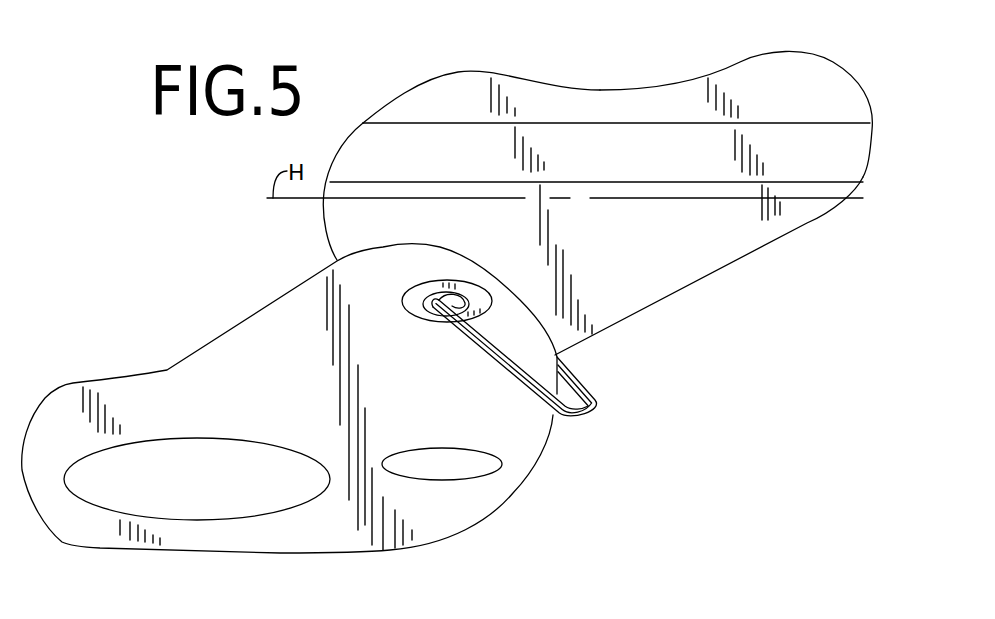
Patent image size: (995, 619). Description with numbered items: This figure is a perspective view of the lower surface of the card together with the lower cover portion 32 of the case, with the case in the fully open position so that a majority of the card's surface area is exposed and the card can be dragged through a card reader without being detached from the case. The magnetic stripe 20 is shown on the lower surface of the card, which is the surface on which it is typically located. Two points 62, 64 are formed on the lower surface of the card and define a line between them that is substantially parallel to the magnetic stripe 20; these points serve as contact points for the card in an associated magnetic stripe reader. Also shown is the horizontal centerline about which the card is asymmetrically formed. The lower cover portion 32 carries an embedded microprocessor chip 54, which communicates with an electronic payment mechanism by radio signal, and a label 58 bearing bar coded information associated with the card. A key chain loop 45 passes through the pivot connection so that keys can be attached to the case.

The magnetic stripe 20 is at (780, 165).
The lower cover portion 32 is at (467, 510).
The key chain loop 45 is at (583, 381).
The microprocessor chip 54 is at (445, 447).
The label 58 is at (232, 440).
The point 62 is at (456, 72).
The point 64 is at (800, 52).